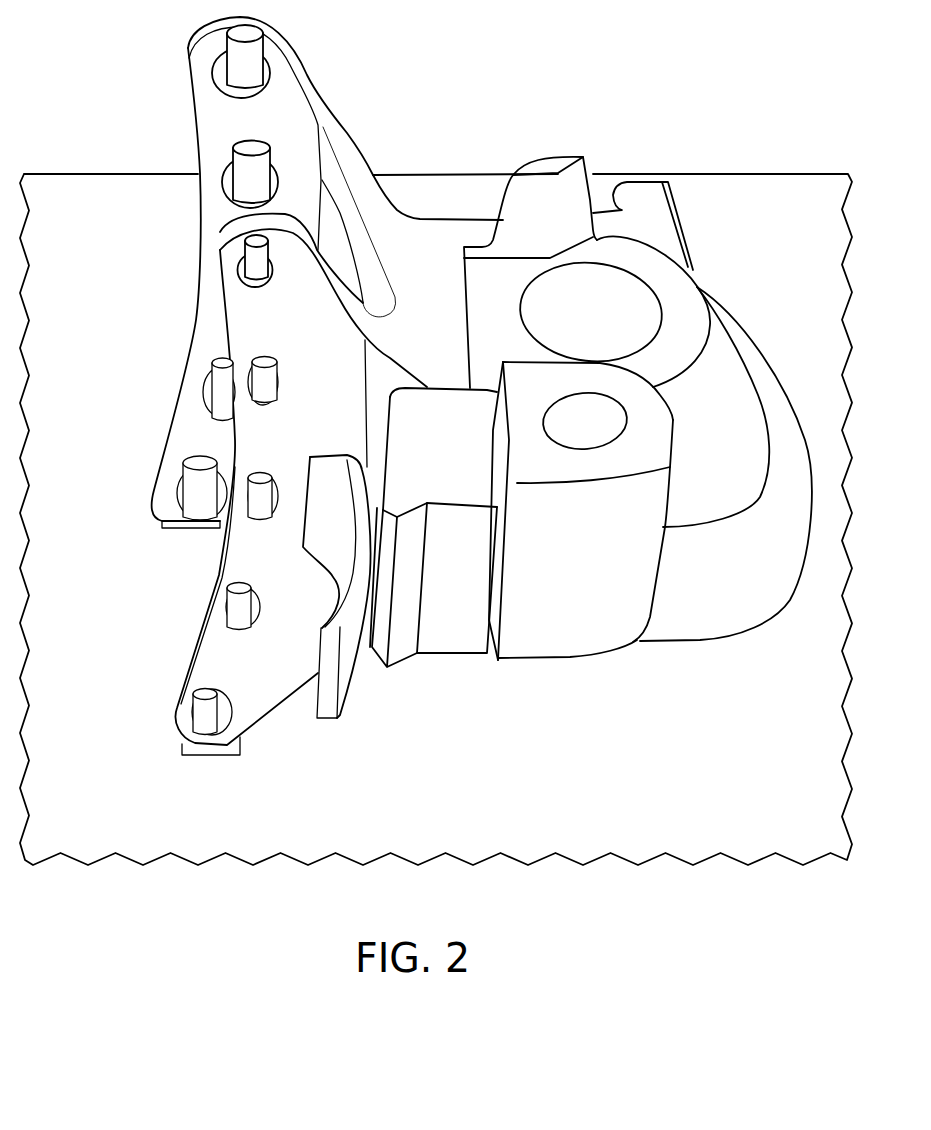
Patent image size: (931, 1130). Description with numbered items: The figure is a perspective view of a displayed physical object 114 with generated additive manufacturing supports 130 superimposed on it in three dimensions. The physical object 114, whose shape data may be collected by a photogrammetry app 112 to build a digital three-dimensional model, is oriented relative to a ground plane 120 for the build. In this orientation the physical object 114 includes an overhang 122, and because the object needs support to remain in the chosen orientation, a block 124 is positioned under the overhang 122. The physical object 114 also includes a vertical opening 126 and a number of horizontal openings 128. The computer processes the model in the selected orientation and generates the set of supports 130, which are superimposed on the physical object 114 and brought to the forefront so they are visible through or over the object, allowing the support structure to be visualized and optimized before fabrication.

The photogrammetry app 112 is at (120, 819).
The physical object 114 is at (442, 273).
The ground plane 120 is at (591, 463).
The overhang 122 is at (695, 298).
The block 124 is at (758, 592).
The vertical opening 126 is at (613, 275).
The horizontal openings 128 is at (223, 50).
The supports 130 is at (512, 667).